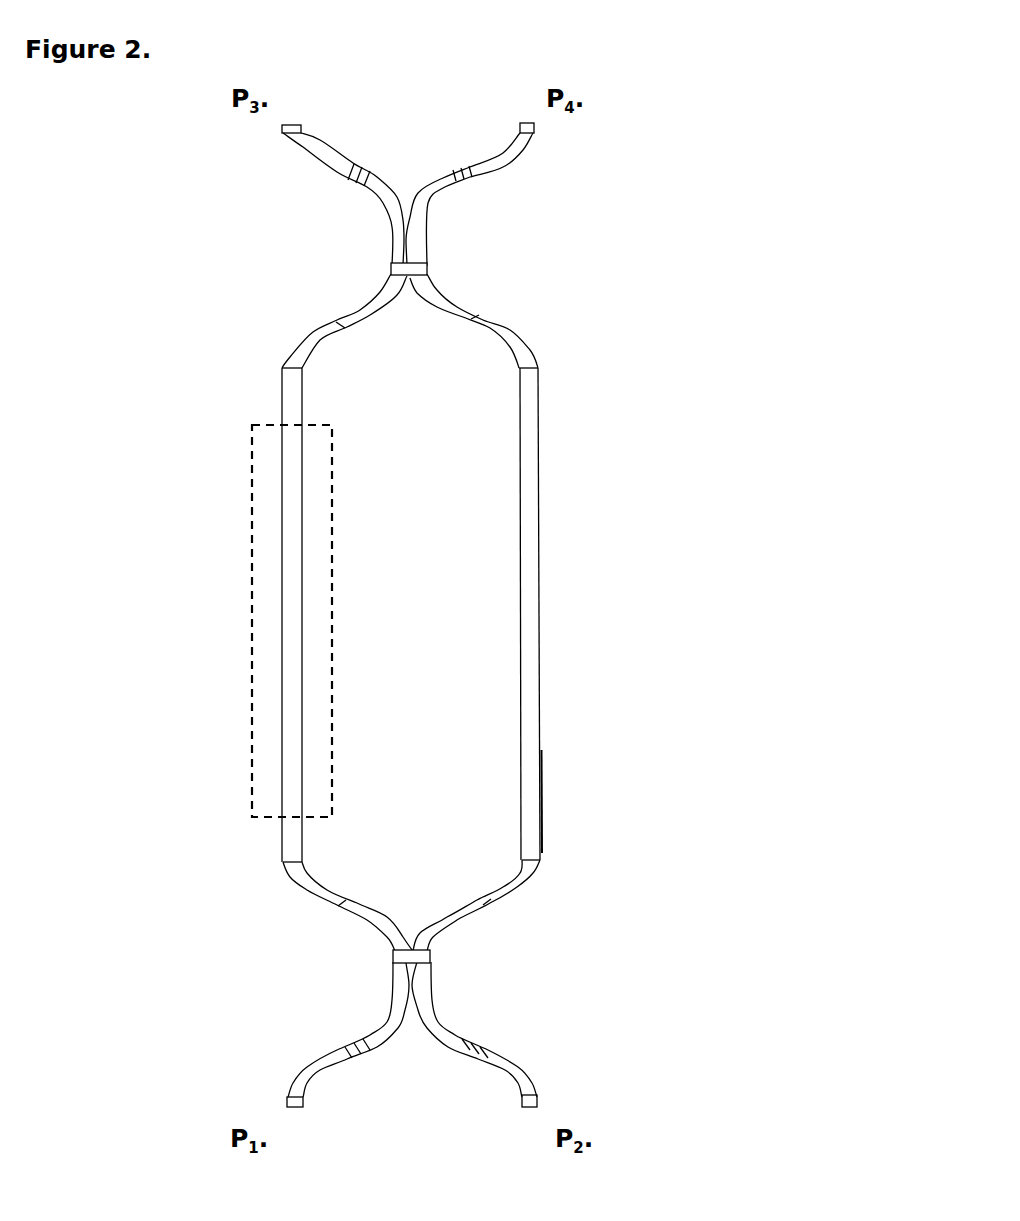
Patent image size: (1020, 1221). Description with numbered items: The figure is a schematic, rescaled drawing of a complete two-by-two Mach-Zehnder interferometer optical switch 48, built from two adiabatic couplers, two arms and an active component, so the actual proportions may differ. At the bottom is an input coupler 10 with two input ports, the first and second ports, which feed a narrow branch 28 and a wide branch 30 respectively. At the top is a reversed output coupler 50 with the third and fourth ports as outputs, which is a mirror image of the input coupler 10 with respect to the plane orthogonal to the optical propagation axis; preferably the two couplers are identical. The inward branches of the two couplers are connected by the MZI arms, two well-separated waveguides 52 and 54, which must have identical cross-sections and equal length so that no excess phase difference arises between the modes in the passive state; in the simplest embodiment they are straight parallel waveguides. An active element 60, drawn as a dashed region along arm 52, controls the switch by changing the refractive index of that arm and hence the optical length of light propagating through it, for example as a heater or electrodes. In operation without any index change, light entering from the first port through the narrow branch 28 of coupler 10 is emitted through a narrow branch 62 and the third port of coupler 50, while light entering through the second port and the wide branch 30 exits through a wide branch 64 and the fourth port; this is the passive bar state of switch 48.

The input coupler 10 is at (149, 1014).
The narrow branch 28 is at (387, 1022).
The wide branch 30 is at (436, 1023).
The 2×2 MZI switch 48 is at (921, 610).
The output coupler 50 is at (144, 243).
The arm 52 is at (277, 688).
The arm 54 is at (538, 665).
The active element 60 is at (250, 585).
The narrow branch 62 is at (370, 213).
The wide branch 64 is at (440, 213).